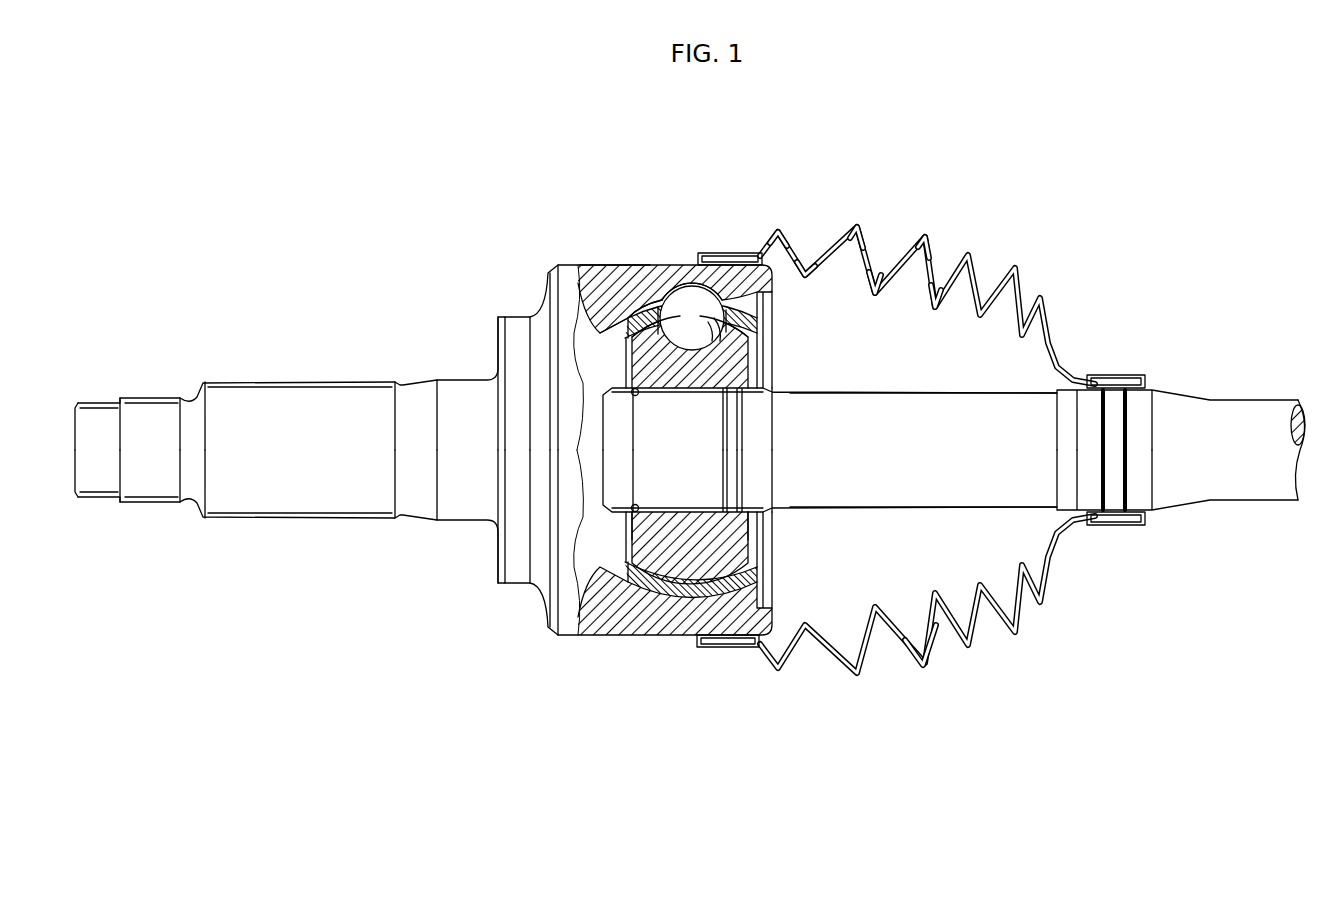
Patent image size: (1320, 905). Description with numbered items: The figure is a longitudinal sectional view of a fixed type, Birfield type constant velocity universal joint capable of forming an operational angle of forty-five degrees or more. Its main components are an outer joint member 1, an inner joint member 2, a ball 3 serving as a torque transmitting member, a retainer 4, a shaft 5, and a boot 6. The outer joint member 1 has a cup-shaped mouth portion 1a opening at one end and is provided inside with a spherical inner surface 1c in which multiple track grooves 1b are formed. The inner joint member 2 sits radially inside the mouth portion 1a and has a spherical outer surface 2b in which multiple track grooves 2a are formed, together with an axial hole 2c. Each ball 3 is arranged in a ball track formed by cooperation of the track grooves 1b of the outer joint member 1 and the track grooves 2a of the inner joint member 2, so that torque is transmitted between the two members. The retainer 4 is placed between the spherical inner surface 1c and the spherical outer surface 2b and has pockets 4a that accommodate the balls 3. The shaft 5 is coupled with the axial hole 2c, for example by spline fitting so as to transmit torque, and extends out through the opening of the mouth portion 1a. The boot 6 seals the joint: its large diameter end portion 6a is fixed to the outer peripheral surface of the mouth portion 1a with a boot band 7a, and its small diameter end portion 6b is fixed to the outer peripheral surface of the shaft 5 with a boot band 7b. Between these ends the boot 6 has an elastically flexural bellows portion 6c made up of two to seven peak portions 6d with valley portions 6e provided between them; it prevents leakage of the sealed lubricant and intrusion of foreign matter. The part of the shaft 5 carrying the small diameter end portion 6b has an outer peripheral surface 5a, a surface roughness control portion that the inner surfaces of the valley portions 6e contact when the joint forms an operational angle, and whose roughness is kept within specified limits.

The outer joint member 1 is at (541, 300).
The mouth portion 1a is at (618, 264).
The track grooves 1b is at (743, 297).
The spherical inner surface 1c is at (643, 312).
The inner joint member 2 is at (751, 537).
The track grooves 2a is at (728, 359).
The spherical outer surface 2b is at (637, 332).
The axial hole 2c is at (664, 532).
The ball 3 is at (687, 305).
The retainer 4 is at (664, 598).
The pockets 4a is at (672, 300).
The shaft 5 is at (1184, 507).
The outer peripheral surface 5a is at (927, 488).
The boot 6 is at (936, 247).
The large diameter end portion 6a is at (741, 254).
The small diameter end portion 6b is at (1109, 378).
The bellows portion 6c is at (924, 665).
The peak portions 6d is at (923, 237).
The valley portions 6e is at (981, 320).
The boot band 7a is at (735, 648).
The boot band 7b is at (1114, 526).